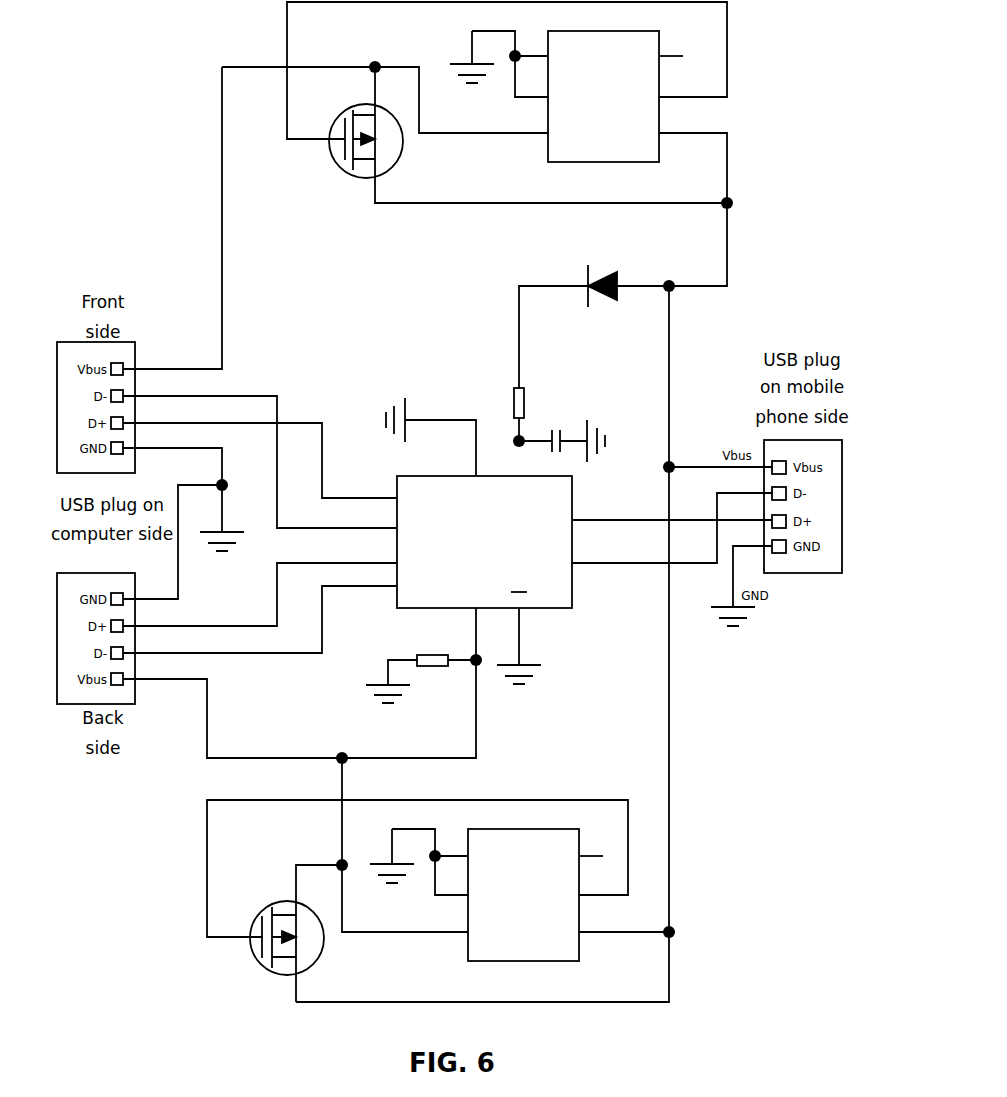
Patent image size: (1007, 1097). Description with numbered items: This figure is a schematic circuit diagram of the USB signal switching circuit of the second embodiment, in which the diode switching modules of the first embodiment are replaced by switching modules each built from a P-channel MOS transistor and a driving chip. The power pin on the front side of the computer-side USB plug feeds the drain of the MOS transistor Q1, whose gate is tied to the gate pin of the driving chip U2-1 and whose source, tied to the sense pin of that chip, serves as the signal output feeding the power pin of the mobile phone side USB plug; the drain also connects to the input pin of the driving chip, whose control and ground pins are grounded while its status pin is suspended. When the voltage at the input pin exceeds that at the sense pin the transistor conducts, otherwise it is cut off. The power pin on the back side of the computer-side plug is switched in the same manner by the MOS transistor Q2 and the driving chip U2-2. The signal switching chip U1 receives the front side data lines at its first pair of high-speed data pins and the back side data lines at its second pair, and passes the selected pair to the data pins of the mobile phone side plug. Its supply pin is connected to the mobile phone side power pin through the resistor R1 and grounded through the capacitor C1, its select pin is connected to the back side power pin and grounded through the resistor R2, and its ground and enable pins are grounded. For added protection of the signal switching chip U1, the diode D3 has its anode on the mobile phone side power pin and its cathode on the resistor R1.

The MOS transistor Q1 is at (370, 144).
The MOS transistor Q2 is at (283, 941).
The signal switching chip U1 is at (486, 548).
The driving chip U2-1 is at (602, 112).
The driving chip U2-2 is at (522, 908).
The diode D3 is at (602, 293).
The resistor R1 is at (508, 414).
The resistor R2 is at (421, 670).
The capacitor C1 is at (562, 434).